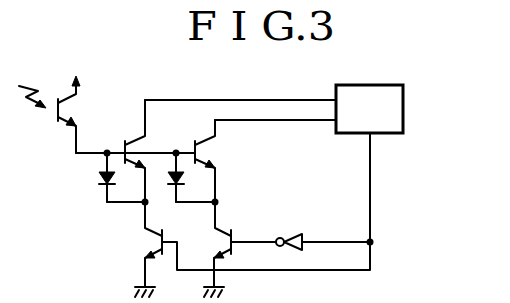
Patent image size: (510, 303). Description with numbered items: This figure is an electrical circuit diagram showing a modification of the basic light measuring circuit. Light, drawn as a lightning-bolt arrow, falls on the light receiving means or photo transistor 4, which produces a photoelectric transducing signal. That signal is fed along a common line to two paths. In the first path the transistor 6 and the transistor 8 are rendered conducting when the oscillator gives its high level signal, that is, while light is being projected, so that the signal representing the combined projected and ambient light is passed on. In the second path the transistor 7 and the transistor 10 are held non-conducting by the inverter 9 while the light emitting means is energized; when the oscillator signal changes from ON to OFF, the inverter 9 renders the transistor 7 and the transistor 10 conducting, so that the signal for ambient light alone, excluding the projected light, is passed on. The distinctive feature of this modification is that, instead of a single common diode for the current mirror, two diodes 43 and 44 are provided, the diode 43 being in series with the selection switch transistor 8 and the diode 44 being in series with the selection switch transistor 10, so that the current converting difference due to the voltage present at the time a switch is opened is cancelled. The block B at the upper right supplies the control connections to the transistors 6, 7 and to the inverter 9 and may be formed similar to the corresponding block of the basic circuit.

The photo transistor 4 is at (64, 124).
The transistor 6 is at (135, 137).
The transistor 7 is at (214, 156).
The transistor 8 is at (152, 243).
The inverter 9 is at (287, 229).
The transistor 10 is at (219, 229).
The diode 43 is at (98, 180).
The diode 44 is at (167, 180).
The block B is at (404, 110).